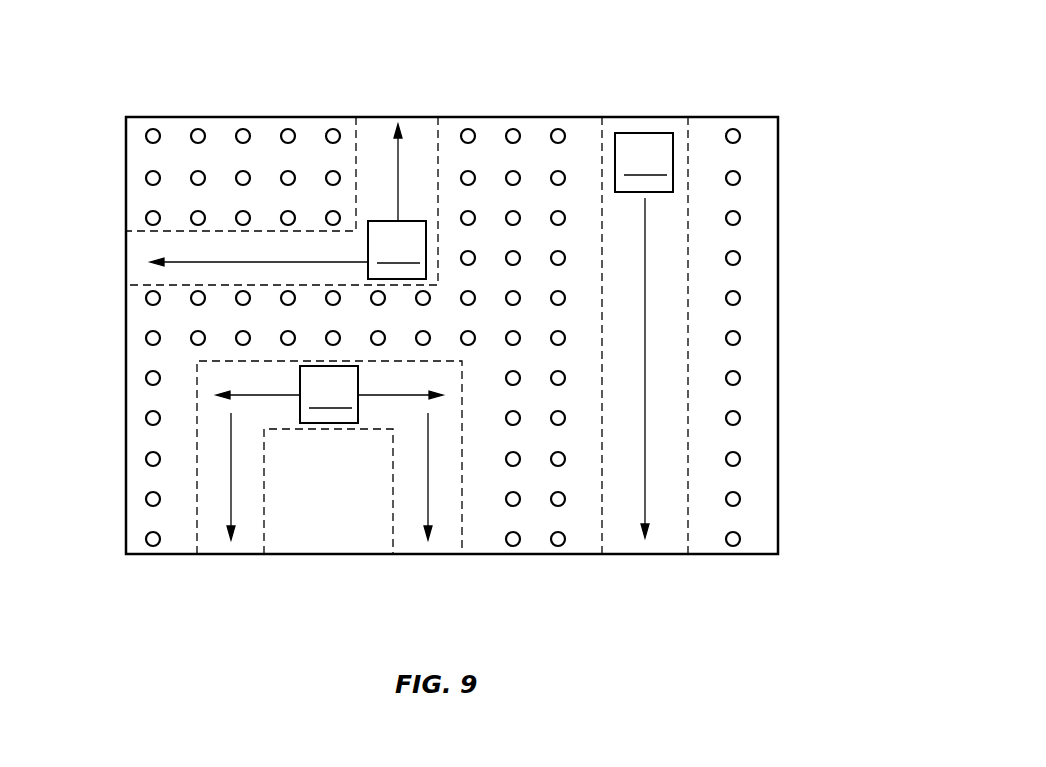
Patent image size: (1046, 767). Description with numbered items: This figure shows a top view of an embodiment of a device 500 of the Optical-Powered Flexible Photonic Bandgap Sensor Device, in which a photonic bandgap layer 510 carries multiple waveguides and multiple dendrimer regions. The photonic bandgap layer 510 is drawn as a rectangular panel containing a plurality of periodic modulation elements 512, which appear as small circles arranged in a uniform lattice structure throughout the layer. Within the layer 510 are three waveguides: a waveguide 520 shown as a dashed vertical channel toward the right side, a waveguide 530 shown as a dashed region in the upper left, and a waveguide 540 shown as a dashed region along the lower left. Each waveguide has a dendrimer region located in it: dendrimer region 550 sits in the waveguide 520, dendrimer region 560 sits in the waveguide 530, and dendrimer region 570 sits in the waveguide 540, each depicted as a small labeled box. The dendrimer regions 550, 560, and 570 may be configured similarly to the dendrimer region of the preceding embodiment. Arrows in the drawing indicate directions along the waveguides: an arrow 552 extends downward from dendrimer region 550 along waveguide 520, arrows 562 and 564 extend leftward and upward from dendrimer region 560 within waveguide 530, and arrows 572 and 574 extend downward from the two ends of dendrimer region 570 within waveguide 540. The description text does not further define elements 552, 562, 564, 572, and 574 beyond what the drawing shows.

The device 500 is at (128, 88).
The photonic bandgap layer 510 is at (778, 162).
The periodic modulation elements 512 is at (741, 298).
The waveguide 520 is at (616, 531).
The waveguide 530 is at (378, 145).
The waveguide 540 is at (211, 531).
The dendrimer region 550 is at (644, 162).
The direction arrow 552 is at (645, 503).
The dendrimer region 560 is at (282, 201).
The direction arrow 562 is at (178, 262).
The direction arrow 564 is at (403, 153).
The dendrimer region 570 is at (329, 394).
The direction arrow 572 is at (232, 502).
The direction arrow 574 is at (428, 502).